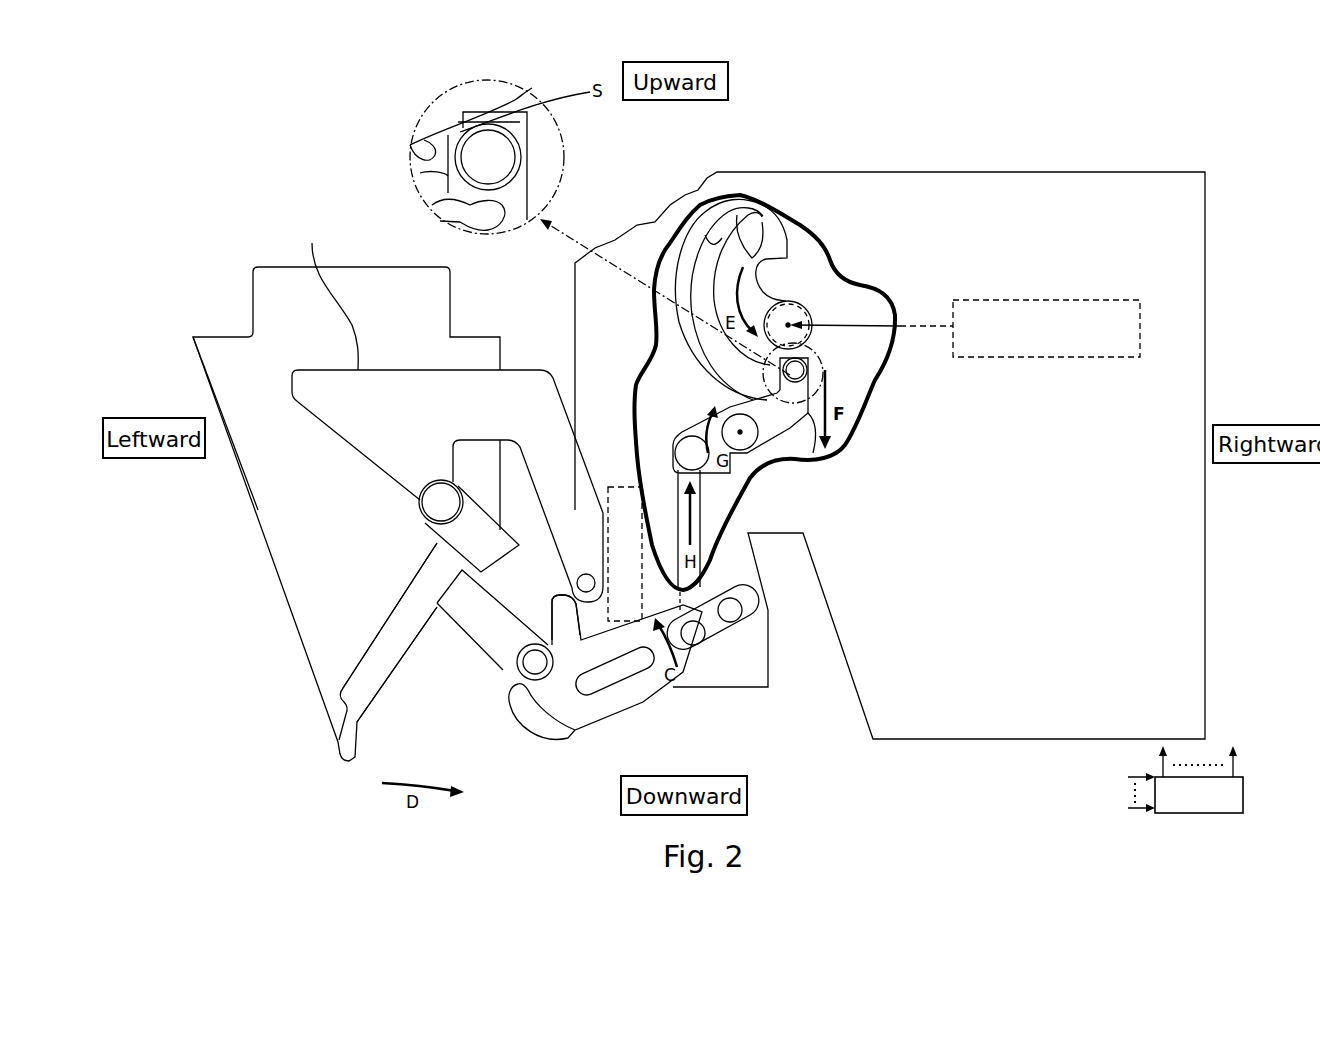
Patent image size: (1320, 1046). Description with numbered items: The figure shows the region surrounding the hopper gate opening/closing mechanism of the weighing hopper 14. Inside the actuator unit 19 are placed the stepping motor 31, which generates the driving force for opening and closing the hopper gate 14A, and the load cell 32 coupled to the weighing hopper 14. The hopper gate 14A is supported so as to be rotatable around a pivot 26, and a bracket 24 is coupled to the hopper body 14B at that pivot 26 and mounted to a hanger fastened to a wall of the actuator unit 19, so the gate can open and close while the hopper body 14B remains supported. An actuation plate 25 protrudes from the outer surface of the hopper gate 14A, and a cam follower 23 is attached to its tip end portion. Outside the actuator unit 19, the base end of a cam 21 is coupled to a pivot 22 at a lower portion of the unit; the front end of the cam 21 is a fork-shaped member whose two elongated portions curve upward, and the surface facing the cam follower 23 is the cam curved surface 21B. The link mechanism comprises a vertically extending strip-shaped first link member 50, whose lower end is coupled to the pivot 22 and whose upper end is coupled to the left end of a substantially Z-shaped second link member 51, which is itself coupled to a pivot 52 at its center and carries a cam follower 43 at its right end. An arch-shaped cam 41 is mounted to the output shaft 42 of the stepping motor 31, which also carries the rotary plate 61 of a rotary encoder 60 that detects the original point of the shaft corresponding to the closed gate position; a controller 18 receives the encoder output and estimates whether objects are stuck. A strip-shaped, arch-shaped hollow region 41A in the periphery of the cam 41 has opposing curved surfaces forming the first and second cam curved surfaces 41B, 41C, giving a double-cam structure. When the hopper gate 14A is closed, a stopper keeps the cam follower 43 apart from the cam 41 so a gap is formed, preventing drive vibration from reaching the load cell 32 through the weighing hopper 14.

The weighing hopper 14 is at (266, 587).
The hopper gate 14A is at (382, 697).
The hopper body 14B is at (238, 470).
The controller 18 is at (1245, 795).
The actuator unit 19 is at (923, 741).
The cam 21 is at (645, 705).
The cam curved surface 21B is at (550, 597).
The pivot 22 is at (713, 622).
The cam follower 23 is at (516, 688).
The bracket 24 is at (329, 293).
The actuation plate 25 is at (470, 645).
The pivot 26 is at (442, 502).
The stepping motor 31 is at (1048, 300).
The load cell 32 is at (625, 487).
The cam 41 is at (787, 237).
The hollow region 41A is at (716, 299).
The first cam curved surface 41B is at (739, 215).
The second cam curved surface 41C is at (712, 237).
The output shaft 42 is at (790, 313).
The cam follower 43 is at (810, 372).
The first link member 50 is at (706, 520).
The second link member 51 is at (820, 462).
The pivot 52 is at (742, 434).
The rotary encoder 60 is at (806, 313).
The rotary plate 61 is at (875, 295).